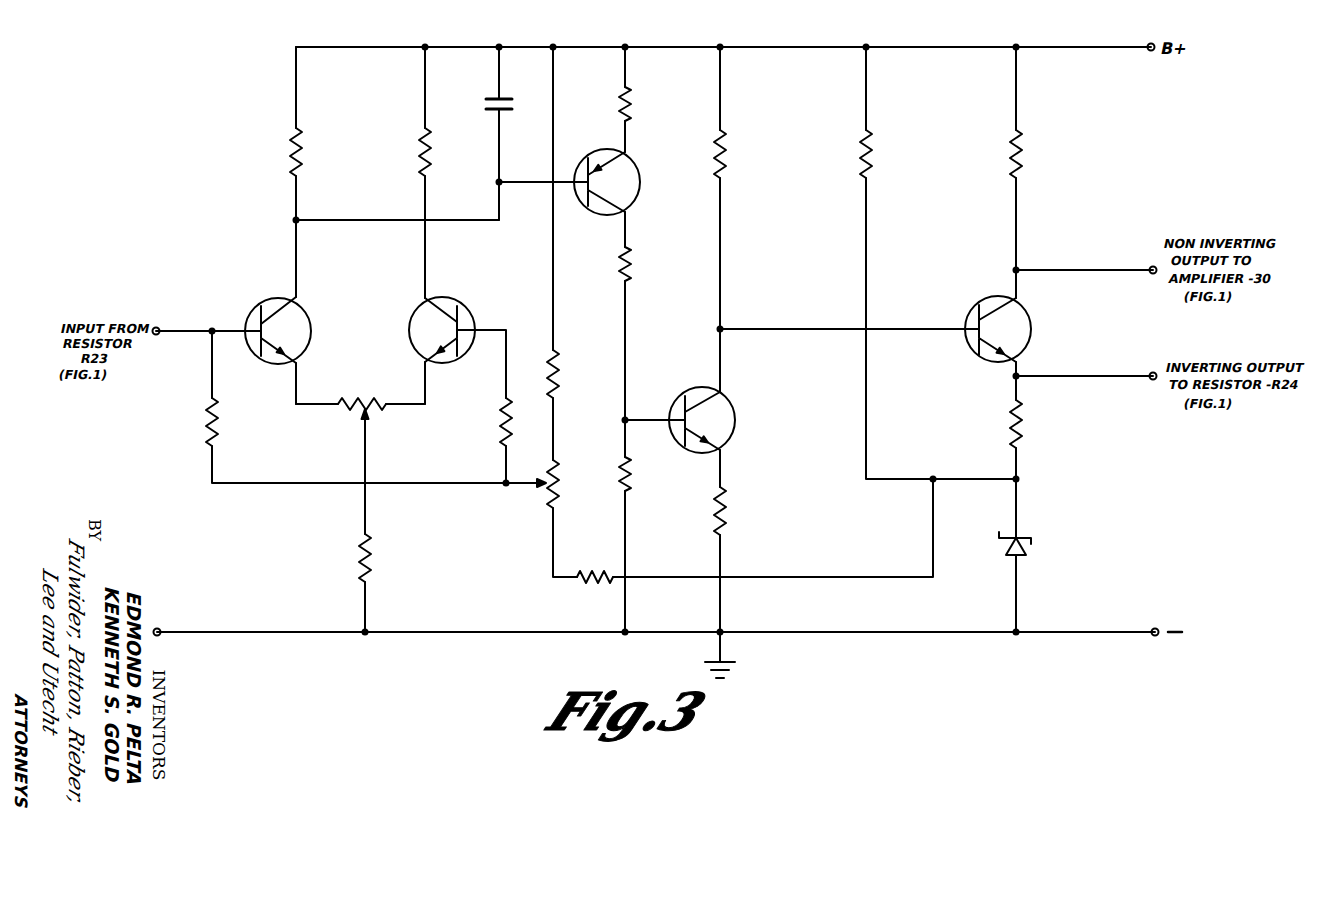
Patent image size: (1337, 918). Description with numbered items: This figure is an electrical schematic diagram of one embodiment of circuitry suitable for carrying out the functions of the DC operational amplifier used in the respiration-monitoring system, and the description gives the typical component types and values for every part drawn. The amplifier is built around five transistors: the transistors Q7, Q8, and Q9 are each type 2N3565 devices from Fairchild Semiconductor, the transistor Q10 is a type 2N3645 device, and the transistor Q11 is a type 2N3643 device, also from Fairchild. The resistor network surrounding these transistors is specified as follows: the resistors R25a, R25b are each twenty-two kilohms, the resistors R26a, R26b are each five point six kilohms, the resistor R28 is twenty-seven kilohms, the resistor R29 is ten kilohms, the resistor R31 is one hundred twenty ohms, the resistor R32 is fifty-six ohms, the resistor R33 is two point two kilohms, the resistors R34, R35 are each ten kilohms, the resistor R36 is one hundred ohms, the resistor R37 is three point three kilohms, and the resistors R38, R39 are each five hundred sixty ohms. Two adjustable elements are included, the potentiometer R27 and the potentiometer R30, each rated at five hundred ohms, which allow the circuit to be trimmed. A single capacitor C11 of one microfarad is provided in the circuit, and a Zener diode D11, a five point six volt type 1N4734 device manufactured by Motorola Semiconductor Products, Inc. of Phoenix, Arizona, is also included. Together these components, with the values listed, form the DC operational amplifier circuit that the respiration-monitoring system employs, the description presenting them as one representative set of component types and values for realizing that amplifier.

The resistor R26a is at (287, 150).
The resistor R26b is at (418, 139).
The capacitor C11 is at (484, 108).
The resistor R32 is at (633, 109).
The transistor Q10 is at (641, 171).
The resistor R33 is at (633, 265).
The resistor R35 is at (729, 157).
The resistor R37 is at (876, 157).
The resistor R38 is at (1027, 146).
The transistor Q7 is at (309, 310).
The transistor Q8 is at (466, 305).
The potentiometer R27 is at (388, 389).
The resistor R25a is at (221, 435).
The resistor R25b is at (494, 425).
The resistor R29 is at (561, 379).
The potentiometer R30 is at (561, 489).
The resistor R34 is at (636, 480).
The transistor Q9 is at (731, 400).
The resistor R36 is at (733, 502).
The transistor Q11 is at (1031, 311).
The resistor R39 is at (1026, 432).
The resistor R28 is at (376, 560).
The resistor R31 is at (579, 588).
The Zener diode D11 is at (1030, 549).